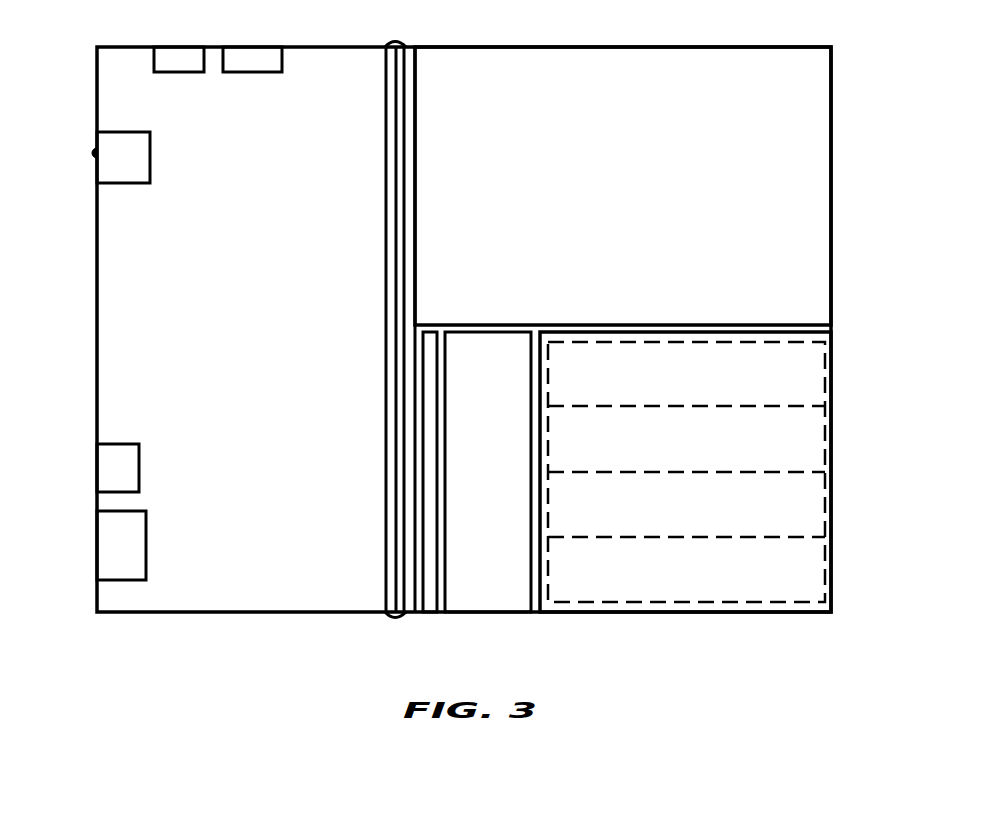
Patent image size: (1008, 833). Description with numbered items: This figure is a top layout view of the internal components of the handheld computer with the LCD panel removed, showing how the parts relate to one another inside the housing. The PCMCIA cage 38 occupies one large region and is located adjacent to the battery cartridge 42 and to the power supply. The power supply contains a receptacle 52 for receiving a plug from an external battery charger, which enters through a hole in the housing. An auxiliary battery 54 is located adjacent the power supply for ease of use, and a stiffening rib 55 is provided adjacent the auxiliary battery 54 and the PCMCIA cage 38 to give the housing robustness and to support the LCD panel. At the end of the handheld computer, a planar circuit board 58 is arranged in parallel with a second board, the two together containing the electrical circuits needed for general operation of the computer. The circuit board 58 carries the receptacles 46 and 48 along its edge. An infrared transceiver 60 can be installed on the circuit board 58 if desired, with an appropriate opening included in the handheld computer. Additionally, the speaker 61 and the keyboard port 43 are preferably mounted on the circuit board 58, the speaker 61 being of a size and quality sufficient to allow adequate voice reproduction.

The PCMCIA cage 38 is at (700, 47).
The battery cartridge 42 is at (832, 350).
The keyboard port 43 is at (178, 72).
The receptacle 46 is at (115, 566).
The receptacle 48 is at (110, 470).
The receptacle 52 is at (510, 613).
The auxiliary battery 54 is at (432, 613).
The stiffening rib 55 is at (402, 613).
The circuit board 58 is at (213, 613).
The infrared transceiver 60 is at (108, 184).
The speaker 61 is at (283, 55).